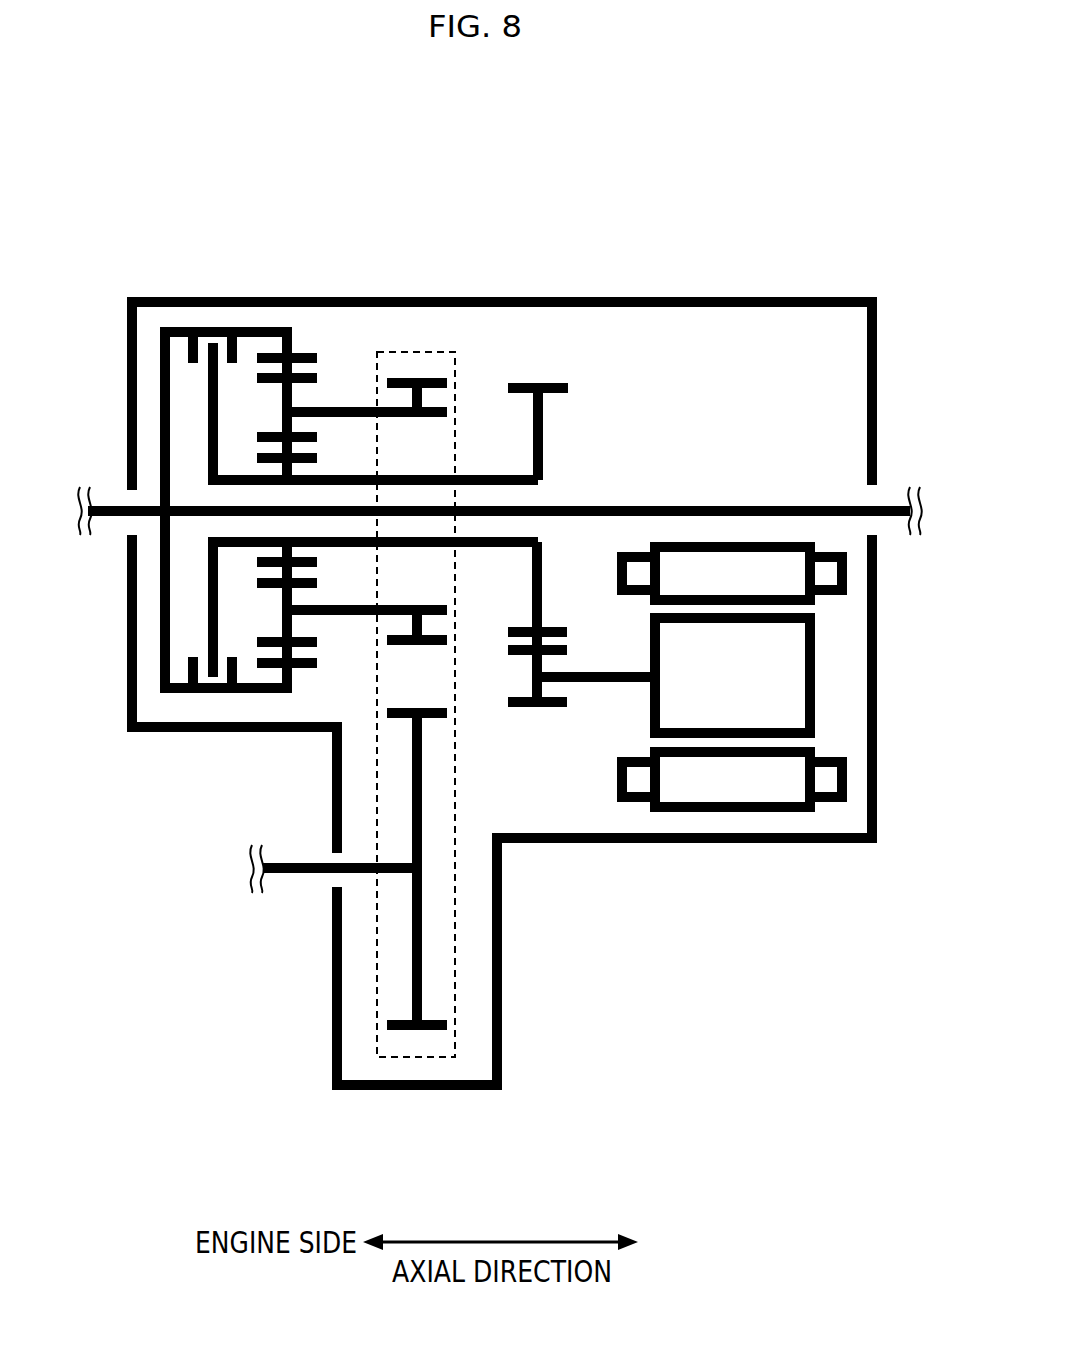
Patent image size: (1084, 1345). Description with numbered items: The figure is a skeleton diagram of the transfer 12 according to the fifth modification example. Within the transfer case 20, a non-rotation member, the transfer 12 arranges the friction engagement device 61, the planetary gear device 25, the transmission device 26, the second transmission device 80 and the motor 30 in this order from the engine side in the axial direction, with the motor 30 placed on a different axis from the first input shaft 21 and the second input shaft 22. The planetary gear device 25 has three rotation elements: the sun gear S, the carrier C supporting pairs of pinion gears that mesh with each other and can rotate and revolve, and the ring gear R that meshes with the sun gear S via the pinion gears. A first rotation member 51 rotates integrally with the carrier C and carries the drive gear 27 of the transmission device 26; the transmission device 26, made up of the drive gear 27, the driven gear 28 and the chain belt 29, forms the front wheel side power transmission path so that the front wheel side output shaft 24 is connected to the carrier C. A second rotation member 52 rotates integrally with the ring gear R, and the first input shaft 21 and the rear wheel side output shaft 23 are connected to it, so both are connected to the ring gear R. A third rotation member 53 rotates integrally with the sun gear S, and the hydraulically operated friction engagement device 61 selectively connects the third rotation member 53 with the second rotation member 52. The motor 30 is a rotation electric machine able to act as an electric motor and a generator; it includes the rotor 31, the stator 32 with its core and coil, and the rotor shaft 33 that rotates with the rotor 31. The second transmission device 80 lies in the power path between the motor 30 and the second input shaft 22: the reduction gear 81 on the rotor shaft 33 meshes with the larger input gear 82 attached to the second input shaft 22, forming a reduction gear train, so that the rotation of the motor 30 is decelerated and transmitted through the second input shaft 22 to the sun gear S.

The transfer 12 is at (178, 201).
The transfer case 20 is at (152, 297).
The first input shaft 21 is at (113, 517).
The second input shaft 22 is at (490, 475).
The rear wheel side output shaft 23 is at (890, 518).
The front wheel side output shaft 24 is at (280, 875).
The planetary gear device 25 is at (262, 285).
The transmission device 26 is at (420, 330).
The drive gear 27 is at (437, 378).
The driven gear 28 is at (430, 1030).
The chain belt 29 is at (455, 983).
The motor 30 is at (729, 824).
The rotor 31 is at (783, 676).
The stator 32 is at (783, 783).
The rotor shaft 33 is at (603, 672).
The first rotation member 51 is at (347, 407).
The second rotation member 52 is at (158, 360).
The third rotation member 53 is at (207, 407).
The friction engagement device 61 is at (221, 320).
The second transmission device 80 is at (537, 722).
The reduction gear 81 is at (557, 707).
The input gear 82 is at (553, 627).
The ring gear R is at (302, 352).
The sun gear S is at (265, 467).
The carrier C is at (320, 418).